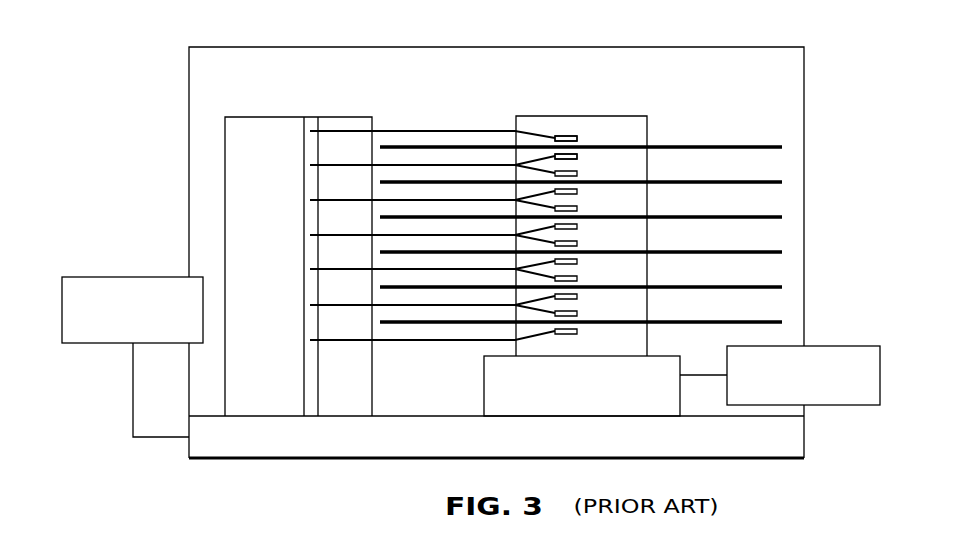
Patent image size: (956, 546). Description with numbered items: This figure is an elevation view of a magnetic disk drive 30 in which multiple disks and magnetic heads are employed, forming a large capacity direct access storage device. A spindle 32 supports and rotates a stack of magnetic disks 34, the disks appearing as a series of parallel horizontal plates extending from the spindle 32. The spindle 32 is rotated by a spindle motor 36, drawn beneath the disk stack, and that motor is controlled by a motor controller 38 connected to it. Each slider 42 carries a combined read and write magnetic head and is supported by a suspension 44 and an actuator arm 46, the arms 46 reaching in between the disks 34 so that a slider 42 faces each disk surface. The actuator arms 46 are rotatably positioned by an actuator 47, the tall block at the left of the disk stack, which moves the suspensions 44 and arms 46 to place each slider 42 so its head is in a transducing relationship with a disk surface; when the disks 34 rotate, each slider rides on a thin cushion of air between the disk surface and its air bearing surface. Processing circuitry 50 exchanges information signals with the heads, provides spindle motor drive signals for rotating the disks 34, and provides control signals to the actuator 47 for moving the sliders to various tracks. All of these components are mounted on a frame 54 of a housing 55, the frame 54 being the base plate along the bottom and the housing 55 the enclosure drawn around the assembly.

The magnetic disk drive 30 is at (704, 116).
The spindle 32 is at (636, 116).
The magnetic disk 34 is at (782, 147).
The spindle motor 36 is at (582, 386).
The motor controller 38 is at (838, 407).
The slider 42 is at (578, 159).
The suspension 44 is at (553, 162).
The actuator arm 46 is at (485, 165).
The actuator 47 is at (254, 117).
The processing circuitry 50 is at (104, 276).
The frame 54 is at (244, 456).
The housing 55 is at (500, 46).